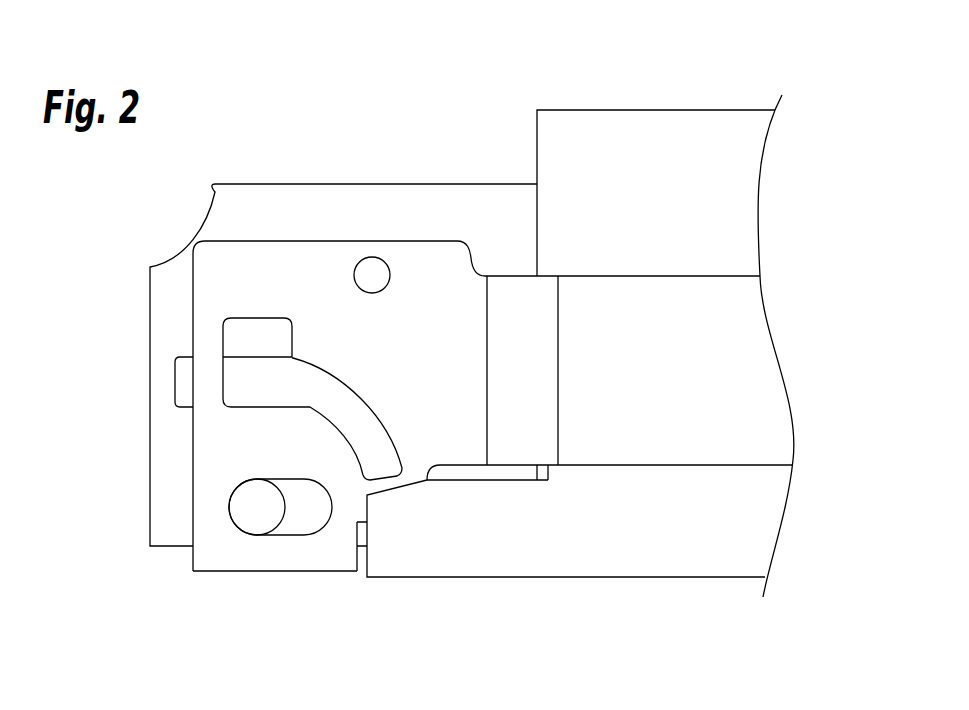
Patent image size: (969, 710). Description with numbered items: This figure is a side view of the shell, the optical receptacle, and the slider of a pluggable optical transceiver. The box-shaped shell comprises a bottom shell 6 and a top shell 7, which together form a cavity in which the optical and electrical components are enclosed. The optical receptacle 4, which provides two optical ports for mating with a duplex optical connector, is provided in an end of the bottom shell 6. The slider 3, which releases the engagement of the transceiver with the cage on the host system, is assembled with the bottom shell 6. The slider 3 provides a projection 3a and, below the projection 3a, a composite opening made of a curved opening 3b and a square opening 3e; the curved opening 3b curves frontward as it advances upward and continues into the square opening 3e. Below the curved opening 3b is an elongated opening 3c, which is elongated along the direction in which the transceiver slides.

The slider 3 is at (232, 572).
The projection 3a is at (375, 268).
The curved opening 3b is at (370, 407).
The elongated opening 3c is at (297, 480).
The square opening 3e is at (265, 333).
The optical receptacle 4 is at (168, 475).
The bottom shell 6 is at (692, 532).
The top shell 7 is at (676, 130).